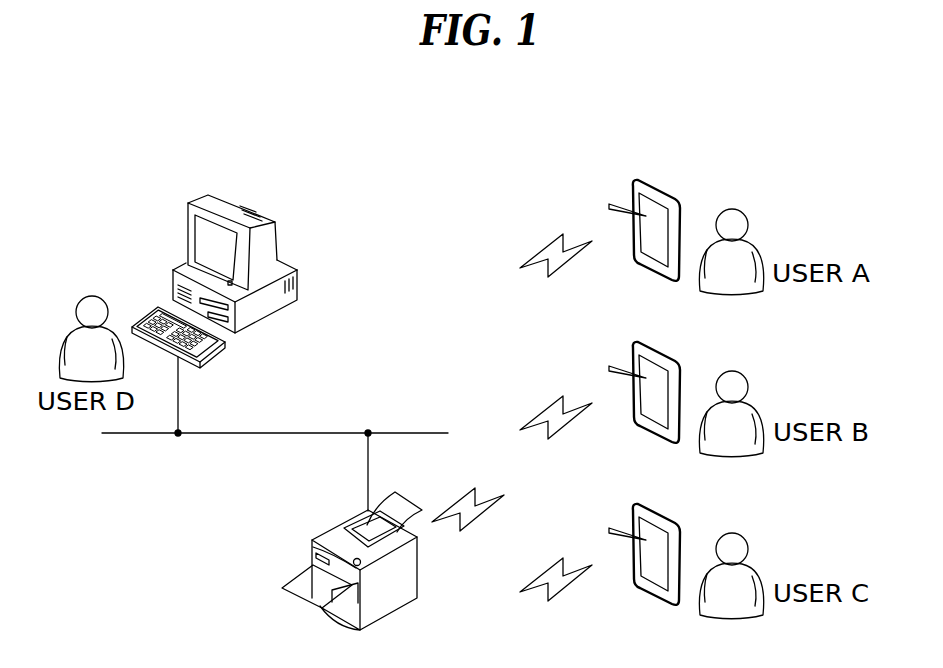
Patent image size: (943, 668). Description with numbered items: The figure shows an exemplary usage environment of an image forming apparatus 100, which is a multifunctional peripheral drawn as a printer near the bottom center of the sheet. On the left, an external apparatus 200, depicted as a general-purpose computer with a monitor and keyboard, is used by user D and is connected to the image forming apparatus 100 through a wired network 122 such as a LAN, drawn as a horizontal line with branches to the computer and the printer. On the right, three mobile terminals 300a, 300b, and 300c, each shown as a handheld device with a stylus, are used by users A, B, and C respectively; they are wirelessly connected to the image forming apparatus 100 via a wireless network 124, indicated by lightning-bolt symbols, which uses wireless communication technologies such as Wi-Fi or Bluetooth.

The image forming apparatus 100 is at (410, 577).
The wired network 122 is at (267, 433).
The wireless network 124 is at (458, 498).
The external apparatus 200 is at (252, 203).
The mobile terminal 300a is at (661, 189).
The mobile terminal 300b is at (667, 370).
The mobile terminal 300c is at (667, 532).